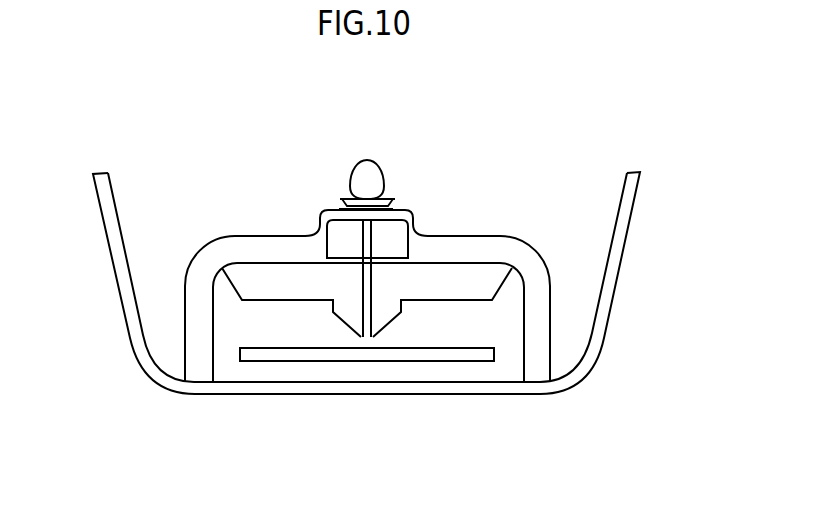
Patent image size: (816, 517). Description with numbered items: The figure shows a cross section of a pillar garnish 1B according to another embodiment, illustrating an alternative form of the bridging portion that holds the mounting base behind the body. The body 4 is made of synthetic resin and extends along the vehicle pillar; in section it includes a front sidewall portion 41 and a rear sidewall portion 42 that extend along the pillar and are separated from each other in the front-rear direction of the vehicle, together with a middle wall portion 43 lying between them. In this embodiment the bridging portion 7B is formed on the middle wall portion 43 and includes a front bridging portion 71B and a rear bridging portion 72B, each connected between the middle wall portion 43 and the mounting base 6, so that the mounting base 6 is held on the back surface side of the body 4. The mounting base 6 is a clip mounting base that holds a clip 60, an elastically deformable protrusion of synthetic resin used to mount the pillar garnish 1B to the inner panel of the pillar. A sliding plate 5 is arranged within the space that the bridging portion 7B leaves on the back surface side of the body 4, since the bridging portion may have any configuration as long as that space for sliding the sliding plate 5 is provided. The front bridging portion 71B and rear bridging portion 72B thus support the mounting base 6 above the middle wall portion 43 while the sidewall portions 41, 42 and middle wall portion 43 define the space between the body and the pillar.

The pillar garnish 1B is at (633, 417).
The body 4 is at (429, 403).
The front sidewall portion 41 is at (113, 234).
The rear sidewall portion 42 is at (622, 235).
The middle wall portion 43 is at (225, 387).
The bridging portion 7B is at (263, 228).
The front bridging portion 71B is at (197, 327).
The rear bridging portion 72B is at (537, 320).
The sliding plate 5 is at (331, 356).
The mounting base 6 is at (395, 199).
The clip 60 is at (370, 178).